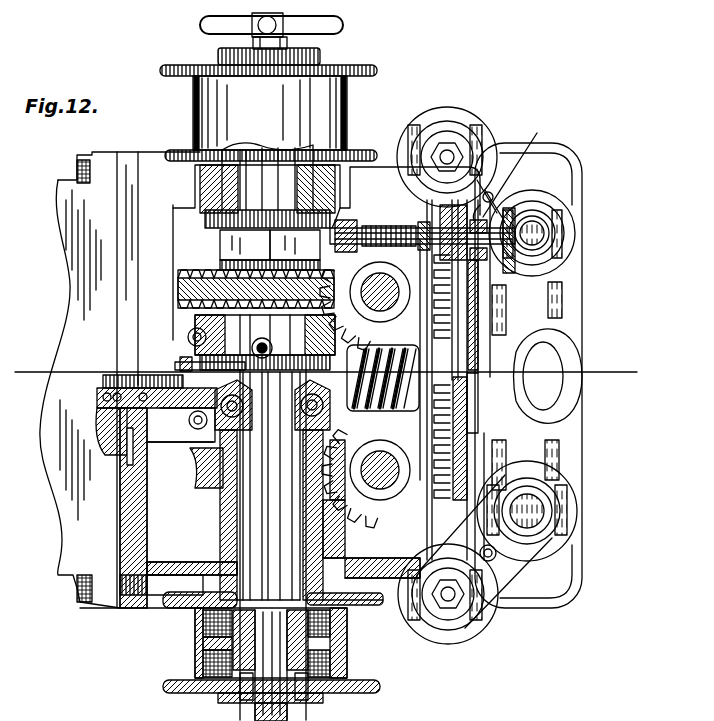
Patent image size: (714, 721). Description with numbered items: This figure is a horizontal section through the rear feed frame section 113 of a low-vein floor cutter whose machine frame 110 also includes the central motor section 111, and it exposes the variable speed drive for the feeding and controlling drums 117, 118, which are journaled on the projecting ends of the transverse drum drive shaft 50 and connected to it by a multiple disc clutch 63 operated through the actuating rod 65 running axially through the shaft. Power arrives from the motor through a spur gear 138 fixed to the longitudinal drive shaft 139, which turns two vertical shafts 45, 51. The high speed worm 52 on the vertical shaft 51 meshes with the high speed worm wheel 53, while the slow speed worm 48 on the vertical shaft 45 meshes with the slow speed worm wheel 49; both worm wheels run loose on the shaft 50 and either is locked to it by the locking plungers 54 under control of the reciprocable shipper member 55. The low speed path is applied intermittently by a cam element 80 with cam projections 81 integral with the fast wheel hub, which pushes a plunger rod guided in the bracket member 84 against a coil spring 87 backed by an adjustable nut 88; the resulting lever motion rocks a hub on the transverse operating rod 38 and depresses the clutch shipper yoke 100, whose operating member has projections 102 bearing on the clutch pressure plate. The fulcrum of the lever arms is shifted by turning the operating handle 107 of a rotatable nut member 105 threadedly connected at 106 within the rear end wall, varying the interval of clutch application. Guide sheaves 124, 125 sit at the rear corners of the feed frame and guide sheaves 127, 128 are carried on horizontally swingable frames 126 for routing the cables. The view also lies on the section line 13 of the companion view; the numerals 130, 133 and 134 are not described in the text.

The section line 13— 13 is at (641, 358).
The feeding and controlling drum 118 is at (205, 70).
The rear feed frame section 113 is at (172, 195).
The machine frame 110 is at (76, 172).
The central motor section 111 is at (68, 322).
The cam element 80 is at (232, 250).
The cam projections 81 is at (272, 250).
The high speed worm wheel 53 is at (180, 290).
The shipper member 55 is at (258, 346).
The drive shaft 139 is at (182, 363).
The clamp block 130 is at (120, 432).
The spur gear 138 is at (193, 424).
The slow speed worm wheel 49 is at (231, 525).
The drum drive shaft 50 is at (238, 508).
The multiple disc clutch 63 is at (200, 624).
The feeding and controlling drum 117 is at (208, 693).
The actuating rod 65 is at (298, 707).
The vertical shaft 51 is at (427, 226).
The high speed worm 52 is at (388, 226).
The bracket member 84 is at (355, 215).
The coil spring 87 is at (420, 226).
The nut 88 is at (360, 205).
The transverse operating rod 38 is at (380, 303).
The locking plungers 54 is at (335, 318).
The clutch shipper yoke 100 is at (392, 428).
The vertical shaft 45 is at (380, 500).
The slow speed worm 48 is at (362, 515).
The projections 102 is at (447, 285).
The lower rack 105 is at (462, 399).
The housing wall 133 is at (475, 335).
The housing slot 134 is at (572, 358).
The guide sheave 125 is at (480, 96).
The threaded connection 106 is at (498, 238).
The operating handle 107 is at (514, 218).
The guide sheave 128 is at (566, 260).
The horizontally swingable frames 126 is at (541, 617).
The guide sheave 127 is at (572, 530).
The guide sheave 124 is at (476, 640).